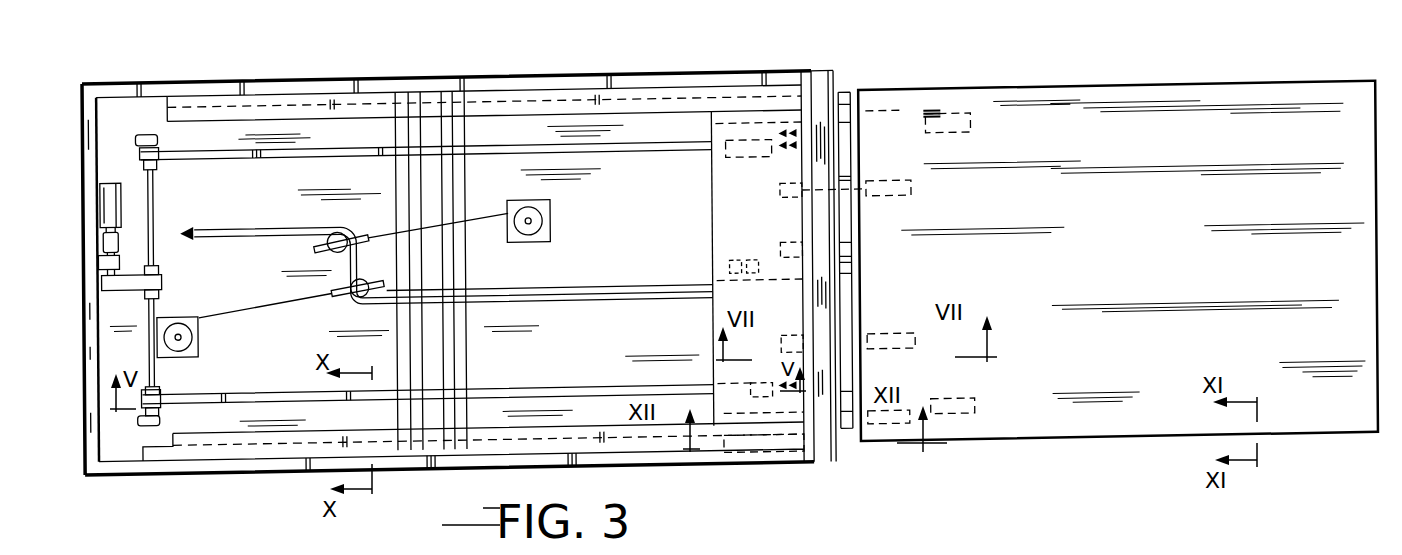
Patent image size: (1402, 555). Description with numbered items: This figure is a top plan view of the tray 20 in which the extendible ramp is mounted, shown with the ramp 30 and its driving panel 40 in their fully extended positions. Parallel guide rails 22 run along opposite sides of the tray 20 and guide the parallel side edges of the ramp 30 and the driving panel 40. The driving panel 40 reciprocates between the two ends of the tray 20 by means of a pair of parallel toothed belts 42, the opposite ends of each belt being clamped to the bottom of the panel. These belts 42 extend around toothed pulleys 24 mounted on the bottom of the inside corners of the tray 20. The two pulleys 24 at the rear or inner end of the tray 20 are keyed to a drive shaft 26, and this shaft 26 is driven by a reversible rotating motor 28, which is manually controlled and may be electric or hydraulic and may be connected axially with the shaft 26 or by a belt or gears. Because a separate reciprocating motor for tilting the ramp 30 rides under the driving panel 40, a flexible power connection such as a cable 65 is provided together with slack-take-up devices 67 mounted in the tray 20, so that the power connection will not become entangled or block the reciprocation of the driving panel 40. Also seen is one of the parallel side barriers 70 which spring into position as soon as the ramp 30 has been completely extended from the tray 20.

The tray 20 is at (502, 86).
The guide rails 22 is at (633, 97).
The toothed pulleys 24 is at (157, 164).
The drive shaft 26 is at (165, 251).
The reversible rotating motor 28 is at (110, 204).
The ramp 30 is at (1147, 243).
The driving panel 40 is at (742, 243).
The toothed belts 42 is at (627, 148).
The cable 65 is at (478, 300).
The slack-take-up devices 67 is at (199, 336).
The side barriers 70 is at (1072, 100).